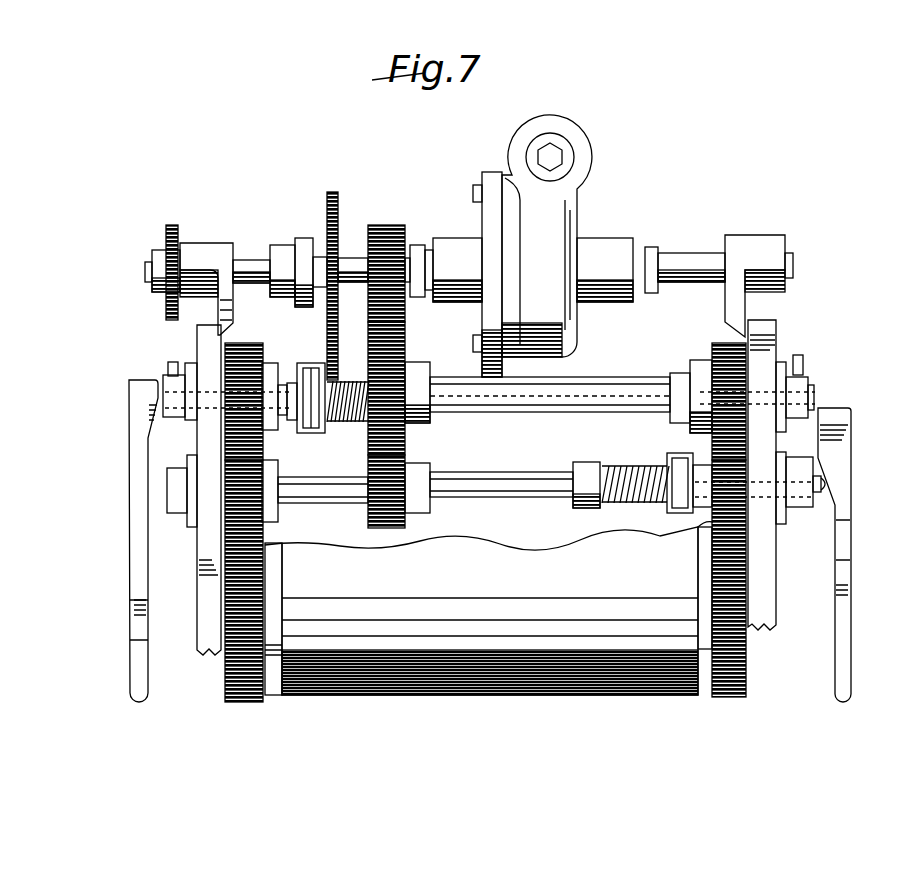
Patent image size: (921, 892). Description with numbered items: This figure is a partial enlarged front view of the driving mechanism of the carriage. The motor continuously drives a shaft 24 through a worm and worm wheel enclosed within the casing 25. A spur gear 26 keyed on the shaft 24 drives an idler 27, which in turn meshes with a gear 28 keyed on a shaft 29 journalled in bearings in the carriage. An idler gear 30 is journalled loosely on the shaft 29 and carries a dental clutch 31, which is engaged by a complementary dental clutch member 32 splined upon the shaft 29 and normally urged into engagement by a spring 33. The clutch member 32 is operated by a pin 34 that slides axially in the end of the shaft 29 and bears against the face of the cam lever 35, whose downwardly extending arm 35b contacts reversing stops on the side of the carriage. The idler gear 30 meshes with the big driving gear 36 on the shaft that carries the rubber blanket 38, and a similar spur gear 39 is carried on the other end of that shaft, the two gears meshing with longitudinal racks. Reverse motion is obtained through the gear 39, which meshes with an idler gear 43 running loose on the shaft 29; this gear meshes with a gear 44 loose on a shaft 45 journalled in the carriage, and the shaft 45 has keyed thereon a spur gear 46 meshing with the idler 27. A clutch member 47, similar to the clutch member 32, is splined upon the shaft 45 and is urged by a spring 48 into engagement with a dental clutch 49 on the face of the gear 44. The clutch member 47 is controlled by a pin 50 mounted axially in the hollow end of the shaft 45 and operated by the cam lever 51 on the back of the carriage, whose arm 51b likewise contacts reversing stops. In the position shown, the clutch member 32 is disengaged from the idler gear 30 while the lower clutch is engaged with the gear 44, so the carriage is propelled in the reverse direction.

The shaft 24 is at (674, 262).
The casing 25 is at (556, 233).
The spur gear 26 is at (386, 232).
The idler 27 is at (396, 340).
The gear 28 is at (418, 418).
The shaft 29 is at (512, 413).
The idler gear 30 is at (246, 348).
The dental clutch 31 is at (272, 432).
The dental clutch member 32 is at (309, 436).
The spring 33 is at (343, 432).
The pin 34 is at (162, 402).
The cam lever 35 is at (136, 393).
The downwardly extending arm 35b is at (136, 665).
The big driving gear 36 is at (235, 601).
The rubber blanket 38 is at (440, 699).
The spur gear 39 is at (745, 666).
The idler gear 43 is at (718, 346).
The gear 44 is at (735, 532).
The shaft 45 is at (476, 502).
The spur gear 46 is at (370, 519).
The clutch member 47 is at (670, 512).
The spring 48 is at (600, 500).
The dental clutch 49 is at (700, 452).
The pin 50 is at (836, 508).
The cam lever 51 is at (835, 434).
The downwardly extending arm 51b is at (851, 652).